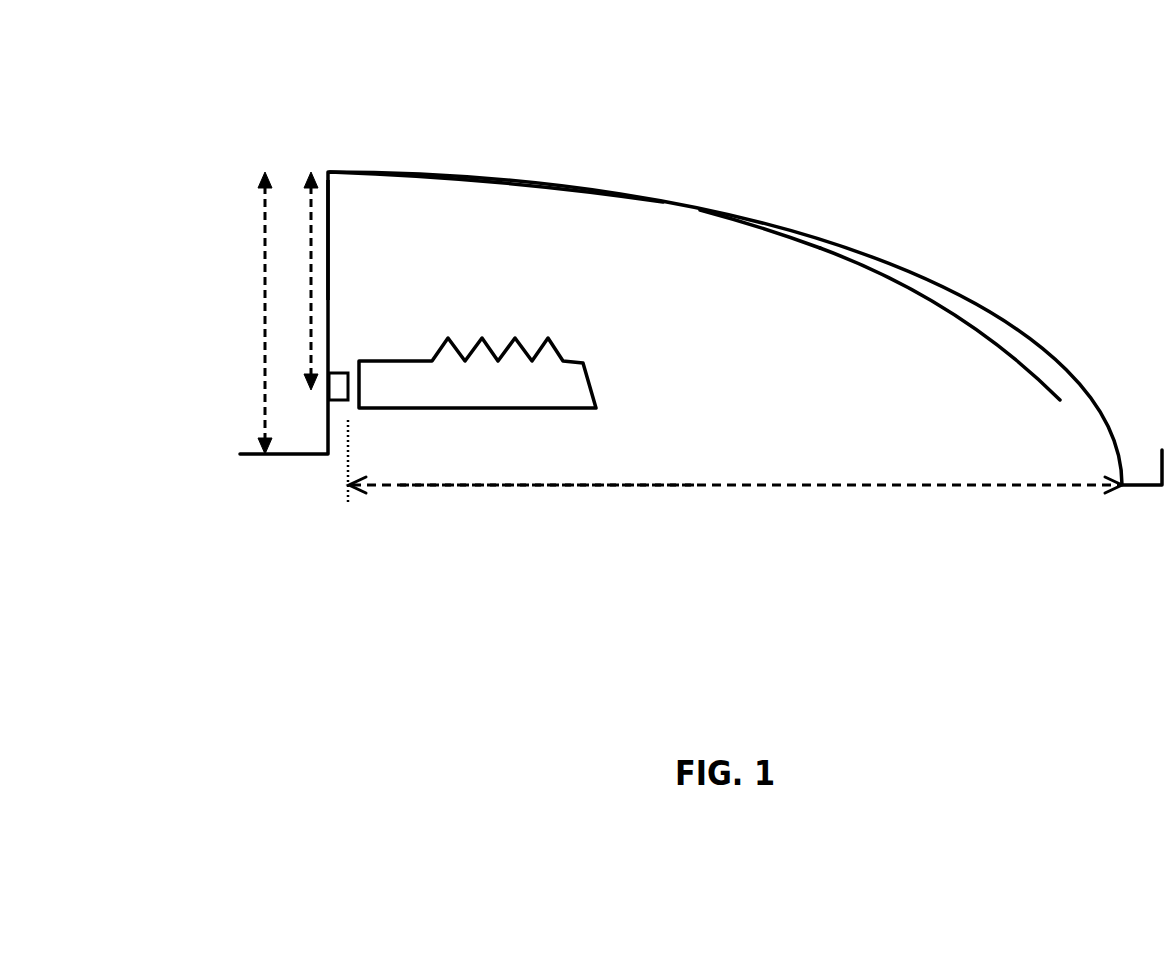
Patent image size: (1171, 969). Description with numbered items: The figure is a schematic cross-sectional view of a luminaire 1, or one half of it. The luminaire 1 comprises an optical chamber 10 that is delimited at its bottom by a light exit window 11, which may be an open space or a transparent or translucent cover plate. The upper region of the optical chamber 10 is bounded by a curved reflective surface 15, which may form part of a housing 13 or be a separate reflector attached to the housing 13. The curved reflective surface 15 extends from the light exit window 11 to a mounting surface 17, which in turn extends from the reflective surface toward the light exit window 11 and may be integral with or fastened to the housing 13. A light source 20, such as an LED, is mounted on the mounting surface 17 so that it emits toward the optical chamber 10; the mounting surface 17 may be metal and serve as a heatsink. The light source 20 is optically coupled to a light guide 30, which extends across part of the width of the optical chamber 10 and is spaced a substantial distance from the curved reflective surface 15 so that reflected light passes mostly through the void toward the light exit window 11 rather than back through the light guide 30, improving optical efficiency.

The luminaire 1 is at (693, 437).
The optical chamber 10 is at (841, 312).
The light exit window 11 is at (540, 448).
The housing 13 is at (663, 202).
The curved reflective surface 15 is at (748, 222).
The mounting surface 17 is at (328, 238).
The light source 20 is at (340, 390).
The light guide 30 is at (547, 376).